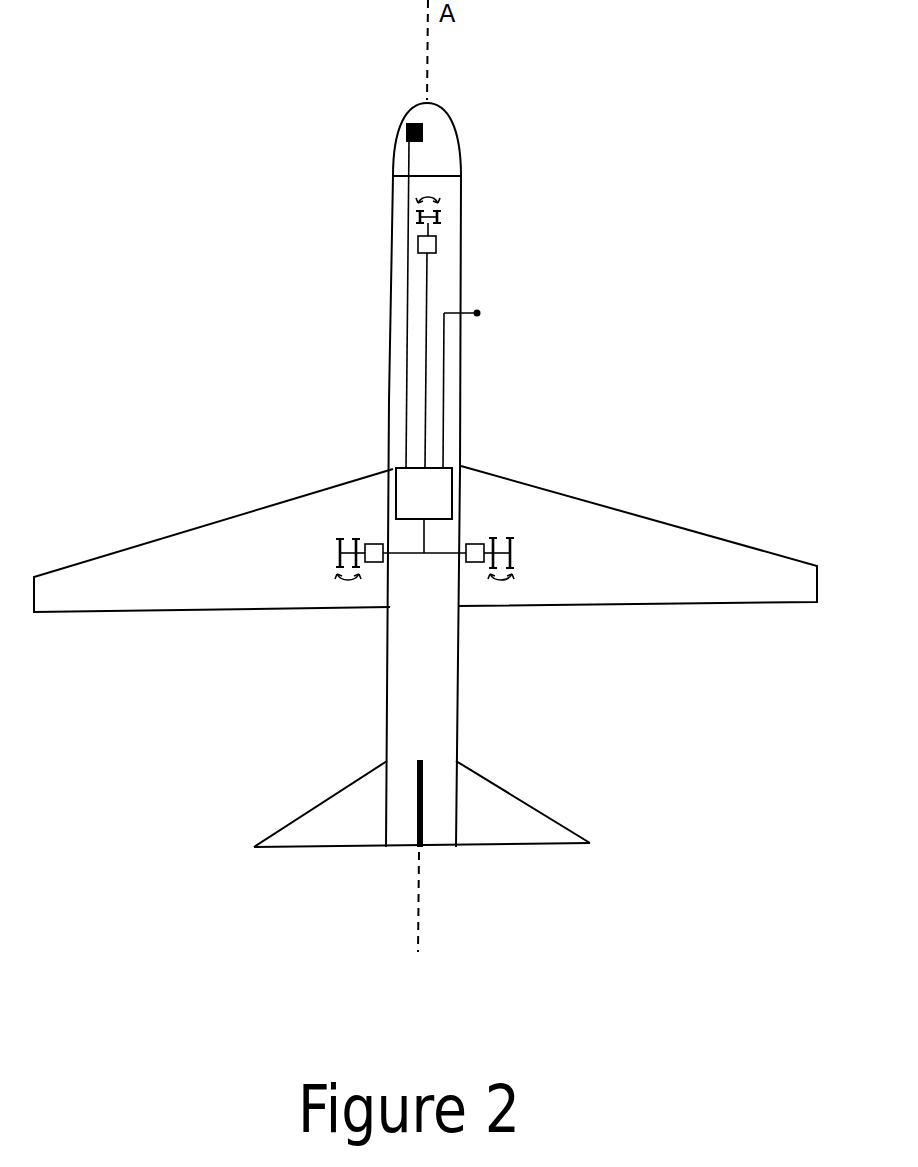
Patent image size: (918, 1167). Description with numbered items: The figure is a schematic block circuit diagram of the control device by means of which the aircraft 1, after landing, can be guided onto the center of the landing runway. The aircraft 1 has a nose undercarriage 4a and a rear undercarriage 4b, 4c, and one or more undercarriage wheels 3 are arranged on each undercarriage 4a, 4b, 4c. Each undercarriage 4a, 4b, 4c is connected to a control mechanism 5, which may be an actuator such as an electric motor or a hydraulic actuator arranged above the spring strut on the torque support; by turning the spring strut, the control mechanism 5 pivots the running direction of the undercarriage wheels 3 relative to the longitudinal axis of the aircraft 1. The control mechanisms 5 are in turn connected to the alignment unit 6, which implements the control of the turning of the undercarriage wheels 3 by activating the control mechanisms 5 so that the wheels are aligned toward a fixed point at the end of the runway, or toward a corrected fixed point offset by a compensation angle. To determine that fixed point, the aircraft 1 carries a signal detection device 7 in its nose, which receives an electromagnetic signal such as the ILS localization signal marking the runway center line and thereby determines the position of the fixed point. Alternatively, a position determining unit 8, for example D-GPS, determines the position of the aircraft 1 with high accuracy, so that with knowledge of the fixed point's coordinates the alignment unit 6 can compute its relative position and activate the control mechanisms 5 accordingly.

The aircraft 1 is at (462, 452).
The undercarriage wheels 3 is at (335, 540).
The nose undercarriage 4a is at (441, 218).
The rear undercarriage 4b is at (342, 595).
The rear undercarriage 4c is at (503, 590).
The control mechanism 5 is at (371, 538).
The alignment unit 6 is at (424, 510).
The signal detection device 7 is at (392, 121).
The position determining unit 8 is at (490, 311).